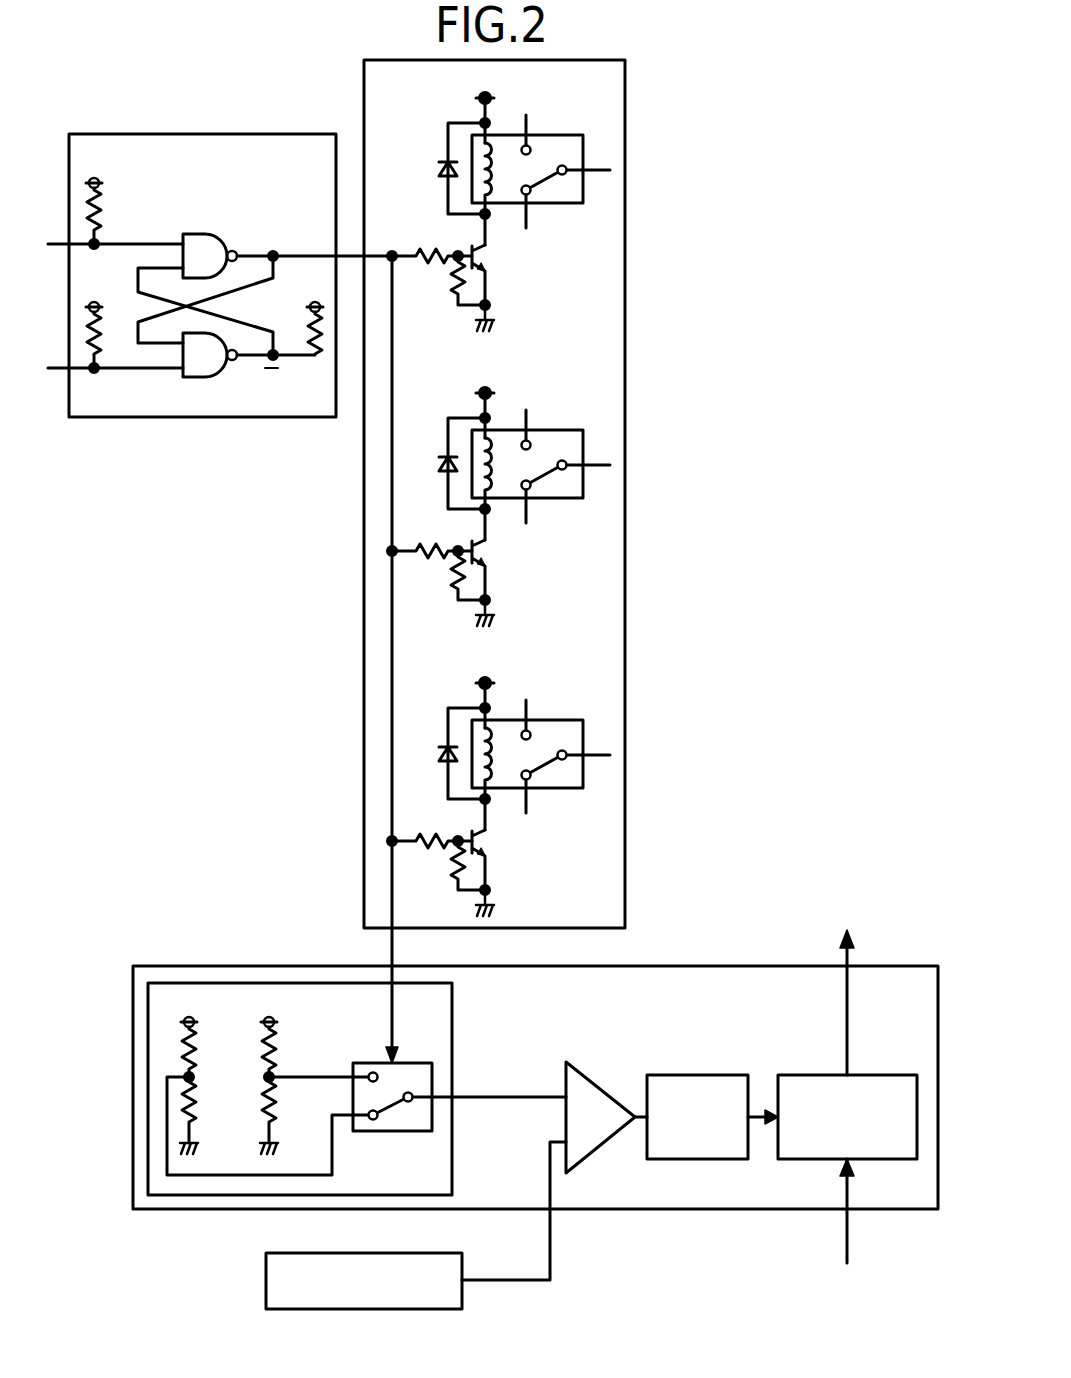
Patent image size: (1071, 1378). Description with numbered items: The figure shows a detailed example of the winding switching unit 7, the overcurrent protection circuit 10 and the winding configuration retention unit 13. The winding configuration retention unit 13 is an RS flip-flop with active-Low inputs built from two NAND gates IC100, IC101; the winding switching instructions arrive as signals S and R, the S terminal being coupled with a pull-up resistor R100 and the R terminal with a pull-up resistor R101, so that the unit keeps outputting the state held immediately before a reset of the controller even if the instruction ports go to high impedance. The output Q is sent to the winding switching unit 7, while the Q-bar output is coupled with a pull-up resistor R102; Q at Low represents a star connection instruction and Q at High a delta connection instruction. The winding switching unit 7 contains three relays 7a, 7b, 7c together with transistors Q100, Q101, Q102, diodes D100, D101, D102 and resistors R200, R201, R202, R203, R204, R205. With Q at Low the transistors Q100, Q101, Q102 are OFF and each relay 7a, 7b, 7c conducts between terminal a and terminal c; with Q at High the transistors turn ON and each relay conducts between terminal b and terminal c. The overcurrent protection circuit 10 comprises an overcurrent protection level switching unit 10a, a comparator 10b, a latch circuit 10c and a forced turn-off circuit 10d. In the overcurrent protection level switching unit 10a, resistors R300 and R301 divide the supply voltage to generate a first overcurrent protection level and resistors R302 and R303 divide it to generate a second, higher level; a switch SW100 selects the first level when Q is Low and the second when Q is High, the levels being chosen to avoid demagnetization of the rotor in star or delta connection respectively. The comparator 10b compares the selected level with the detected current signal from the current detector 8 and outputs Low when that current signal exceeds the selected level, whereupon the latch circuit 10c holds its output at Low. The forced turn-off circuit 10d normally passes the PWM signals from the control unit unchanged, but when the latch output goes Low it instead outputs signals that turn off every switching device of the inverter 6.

The winding configuration retention unit 13 is at (220, 134).
The winding switching unit 7 is at (626, 88).
The relay 7a is at (557, 134).
The relay 7b is at (499, 497).
The relay 7c is at (499, 787).
The overcurrent protection circuit 10 is at (745, 966).
The overcurrent protection level switching unit 10a is at (453, 1018).
The comparator 10b is at (596, 1063).
The latch circuit 10c is at (715, 1075).
The forced turn-off circuit 10d is at (872, 1075).
The inverter 6 is at (858, 1237).
The current detector 8 is at (398, 1253).
The pull-up resistor R100 is at (116, 199).
The pull-up resistor R101 is at (114, 323).
The pull-up resistor R102 is at (292, 317).
The NAND gate IC100 is at (224, 244).
The NAND gate IC101 is at (225, 371).
The diode D100 is at (440, 168).
The diode D101 is at (440, 463).
The diode D102 is at (440, 753).
The transistor Q100 is at (505, 275).
The transistor Q101 is at (505, 570).
The transistor Q102 is at (505, 860).
The resistor R200 is at (432, 245).
The resistor R201 is at (442, 280).
The resistor R202 is at (432, 540).
The resistor R203 is at (442, 575).
The resistor R204 is at (432, 830).
The resistor R205 is at (442, 865).
The resistor R300 is at (211, 1035).
The resistor R301 is at (215, 1110).
The resistor R302 is at (291, 1035).
The resistor R303 is at (295, 1110).
The switch SW100 is at (368, 1132).